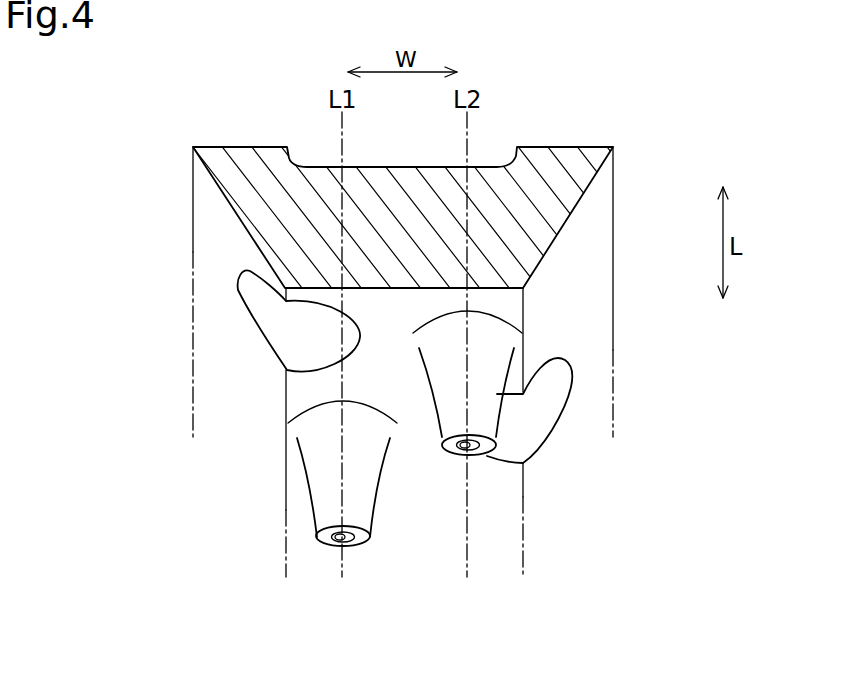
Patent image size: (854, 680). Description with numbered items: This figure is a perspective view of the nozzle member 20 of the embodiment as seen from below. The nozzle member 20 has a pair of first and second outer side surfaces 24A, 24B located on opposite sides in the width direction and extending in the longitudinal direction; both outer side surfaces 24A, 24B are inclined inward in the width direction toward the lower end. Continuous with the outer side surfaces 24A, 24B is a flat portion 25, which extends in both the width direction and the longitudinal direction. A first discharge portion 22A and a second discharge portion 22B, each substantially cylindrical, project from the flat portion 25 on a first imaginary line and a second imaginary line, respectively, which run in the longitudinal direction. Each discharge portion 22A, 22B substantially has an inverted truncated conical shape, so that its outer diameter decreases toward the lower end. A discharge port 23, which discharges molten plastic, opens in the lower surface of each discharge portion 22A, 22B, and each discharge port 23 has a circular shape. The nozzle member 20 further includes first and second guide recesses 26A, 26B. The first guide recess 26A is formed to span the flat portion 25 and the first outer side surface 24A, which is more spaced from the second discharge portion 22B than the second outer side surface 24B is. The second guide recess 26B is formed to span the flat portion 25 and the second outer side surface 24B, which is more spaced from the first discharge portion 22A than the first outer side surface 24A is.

The nozzle member 20 is at (587, 137).
The first discharge portion 22A is at (321, 498).
The second discharge portion 22B is at (487, 418).
The discharge port 23 is at (341, 538).
The first outer side surface 24A is at (193, 258).
The second outer side surface 24B is at (613, 262).
The flat portion 25 is at (287, 390).
The first guide recess 26A is at (263, 322).
The second guide recess 26B is at (547, 412).